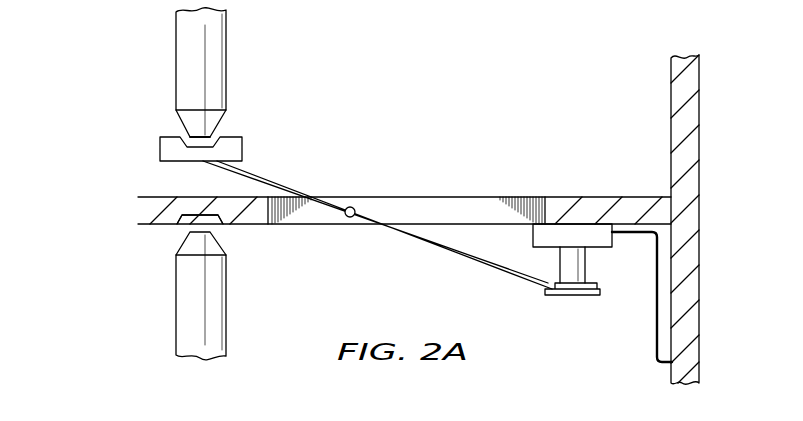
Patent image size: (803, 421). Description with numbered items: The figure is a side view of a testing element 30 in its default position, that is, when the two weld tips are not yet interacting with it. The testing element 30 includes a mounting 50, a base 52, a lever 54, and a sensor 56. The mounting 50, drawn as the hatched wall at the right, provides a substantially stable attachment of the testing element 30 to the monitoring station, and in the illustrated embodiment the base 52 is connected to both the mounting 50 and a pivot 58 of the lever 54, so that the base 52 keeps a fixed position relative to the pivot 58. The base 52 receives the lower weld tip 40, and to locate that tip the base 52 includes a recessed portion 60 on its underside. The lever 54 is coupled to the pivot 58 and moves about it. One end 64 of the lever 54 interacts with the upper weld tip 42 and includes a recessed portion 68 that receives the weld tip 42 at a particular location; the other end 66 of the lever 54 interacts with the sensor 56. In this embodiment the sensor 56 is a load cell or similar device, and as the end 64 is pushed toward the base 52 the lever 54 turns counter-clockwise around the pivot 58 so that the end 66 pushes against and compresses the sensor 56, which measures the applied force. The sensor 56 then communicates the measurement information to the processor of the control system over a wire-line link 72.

The testing element 30 is at (74, 266).
The weld tip 40 is at (176, 314).
The weld tip 42 is at (176, 62).
The mounting 50 is at (699, 178).
The base 52 is at (138, 212).
The lever 54 is at (440, 250).
The sensor 56 is at (586, 264).
The pivot 58 is at (345, 217).
The recessed portion 60 is at (176, 241).
The end 64 is at (160, 148).
The end 66 is at (583, 297).
The recessed portion 68 is at (229, 120).
The wire-line link 72 is at (655, 348).